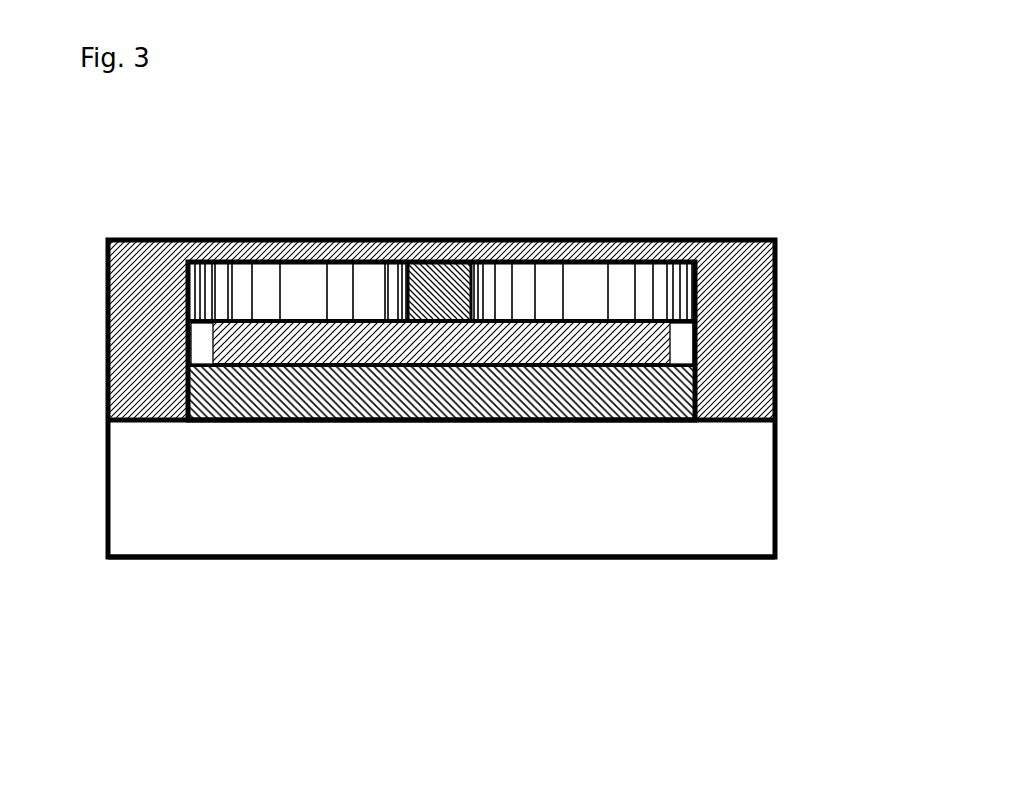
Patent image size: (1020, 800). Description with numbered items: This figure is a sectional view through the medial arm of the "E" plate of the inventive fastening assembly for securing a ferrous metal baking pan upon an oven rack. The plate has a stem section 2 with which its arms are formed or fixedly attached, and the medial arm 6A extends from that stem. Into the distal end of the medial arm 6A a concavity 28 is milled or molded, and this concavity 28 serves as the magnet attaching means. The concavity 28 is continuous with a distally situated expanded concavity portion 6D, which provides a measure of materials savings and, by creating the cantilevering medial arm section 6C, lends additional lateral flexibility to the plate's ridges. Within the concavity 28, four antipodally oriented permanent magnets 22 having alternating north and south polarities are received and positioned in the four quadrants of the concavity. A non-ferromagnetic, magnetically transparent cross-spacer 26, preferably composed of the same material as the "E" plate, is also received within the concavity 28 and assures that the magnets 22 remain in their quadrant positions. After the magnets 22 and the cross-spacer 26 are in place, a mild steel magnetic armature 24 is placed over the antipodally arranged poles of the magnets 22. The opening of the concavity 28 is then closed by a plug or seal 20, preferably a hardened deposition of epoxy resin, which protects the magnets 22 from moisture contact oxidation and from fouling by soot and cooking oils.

The stem section 2 is at (277, 252).
The medial arm 6A is at (133, 342).
The cantilevering medial arm section 6C is at (477, 562).
The expanded concavity portion 6D is at (275, 513).
The plug or seal 20 is at (420, 397).
The permanent magnet 22 is at (338, 285).
The magnetic armature 24 is at (558, 348).
The cross-spacer 26 is at (435, 290).
The concavity 28 is at (198, 347).